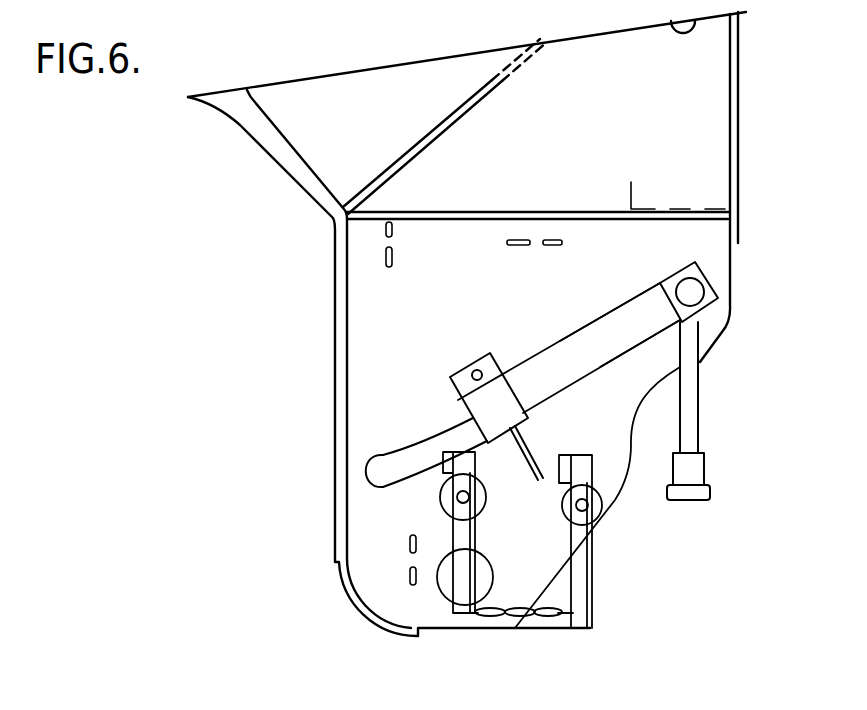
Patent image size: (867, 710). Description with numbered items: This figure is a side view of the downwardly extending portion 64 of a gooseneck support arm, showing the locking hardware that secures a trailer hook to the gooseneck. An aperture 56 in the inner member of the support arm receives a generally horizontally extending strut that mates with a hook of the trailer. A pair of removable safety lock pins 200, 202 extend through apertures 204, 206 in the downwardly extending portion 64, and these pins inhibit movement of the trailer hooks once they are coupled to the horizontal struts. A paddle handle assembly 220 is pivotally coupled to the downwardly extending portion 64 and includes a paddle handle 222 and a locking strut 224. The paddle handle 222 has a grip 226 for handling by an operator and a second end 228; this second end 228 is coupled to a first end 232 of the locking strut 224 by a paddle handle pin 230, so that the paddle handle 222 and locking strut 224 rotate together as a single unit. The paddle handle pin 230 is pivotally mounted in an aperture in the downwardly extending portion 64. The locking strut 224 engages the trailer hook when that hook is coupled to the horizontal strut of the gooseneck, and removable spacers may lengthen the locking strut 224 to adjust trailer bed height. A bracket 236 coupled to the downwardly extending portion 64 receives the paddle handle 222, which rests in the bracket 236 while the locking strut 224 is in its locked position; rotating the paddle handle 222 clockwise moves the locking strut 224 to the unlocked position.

The aperture 56 is at (440, 590).
The downwardly extending portion 64 is at (377, 372).
The removable safety lock pin 200 is at (486, 498).
The removable safety lock pin 202 is at (571, 541).
The aperture 204 is at (448, 500).
The aperture 206 is at (593, 508).
The paddle handle assembly 220 is at (550, 352).
The paddle handle 222 is at (608, 318).
The locking strut 224 is at (698, 402).
The grip 226 is at (365, 483).
The second end 228 is at (645, 328).
The paddle handle pin 230 is at (708, 282).
The first end 232 is at (695, 335).
The bracket 236 is at (462, 415).